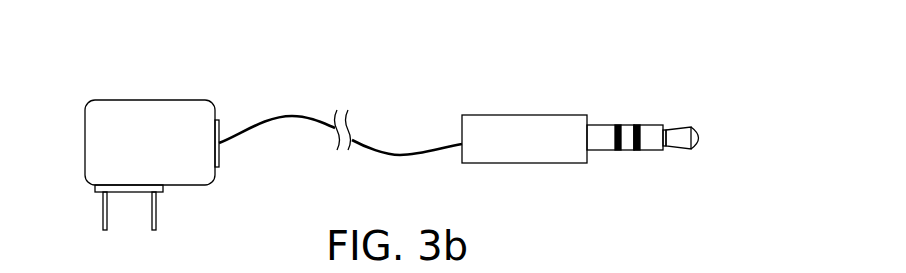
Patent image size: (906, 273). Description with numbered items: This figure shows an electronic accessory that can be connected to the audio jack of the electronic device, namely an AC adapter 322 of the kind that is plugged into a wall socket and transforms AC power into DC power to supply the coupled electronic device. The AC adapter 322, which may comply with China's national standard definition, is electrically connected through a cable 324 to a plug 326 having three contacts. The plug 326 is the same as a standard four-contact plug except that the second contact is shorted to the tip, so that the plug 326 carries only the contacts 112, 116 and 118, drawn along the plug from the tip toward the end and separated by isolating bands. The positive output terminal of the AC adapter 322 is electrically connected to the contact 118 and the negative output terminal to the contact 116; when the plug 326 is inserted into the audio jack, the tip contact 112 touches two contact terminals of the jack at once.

The AC adapter 322 is at (163, 113).
The cable 324 is at (390, 150).
The plug 326 is at (513, 110).
The contact 118 is at (604, 132).
The contact 116 is at (628, 132).
The contact 112 is at (685, 137).